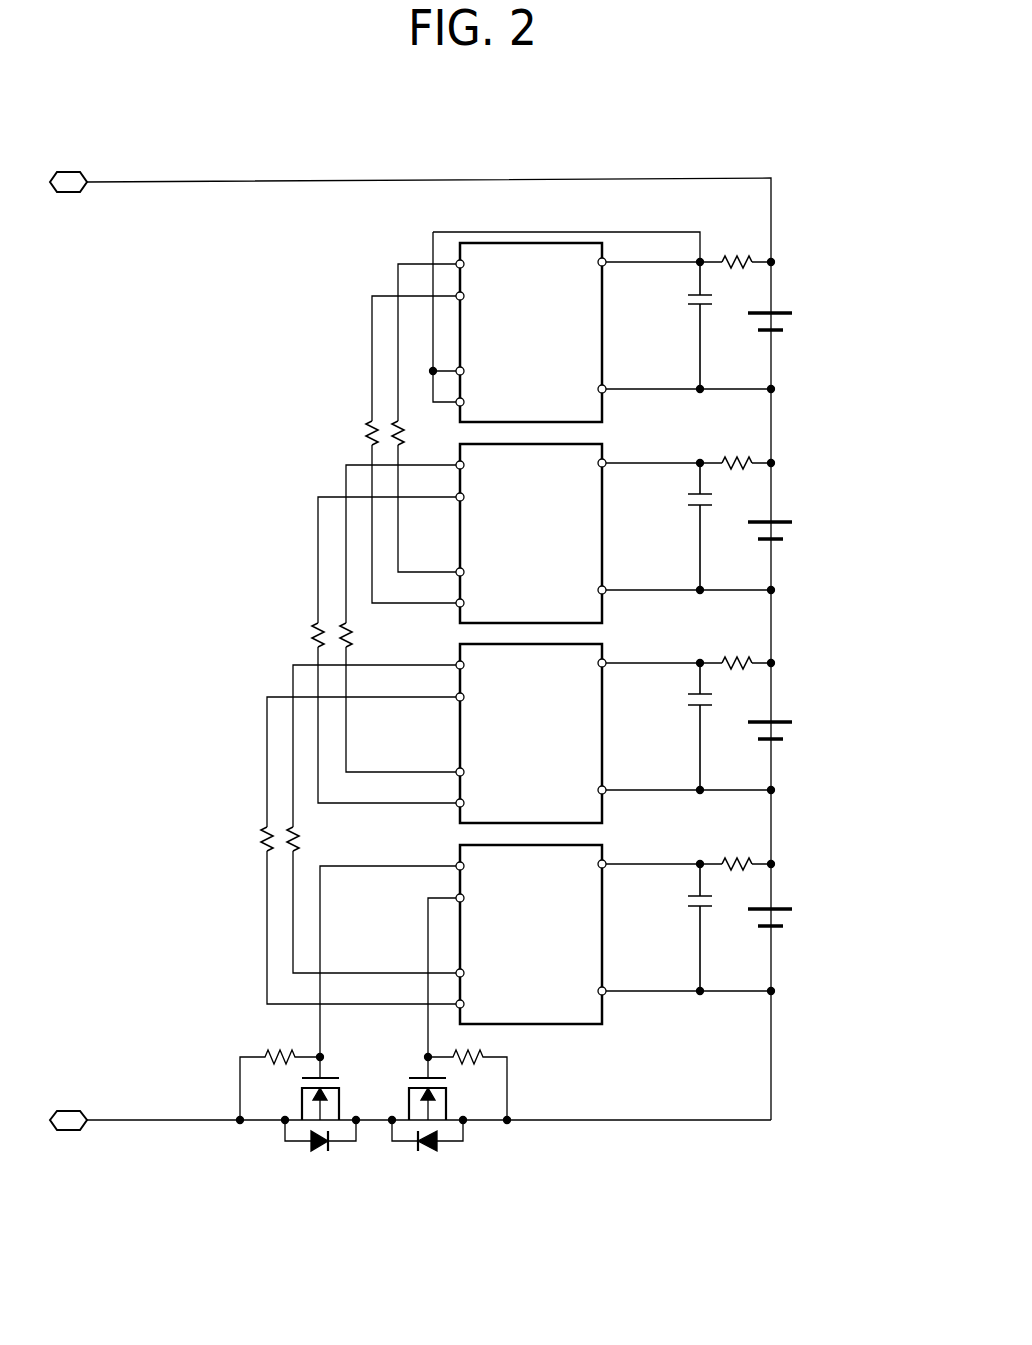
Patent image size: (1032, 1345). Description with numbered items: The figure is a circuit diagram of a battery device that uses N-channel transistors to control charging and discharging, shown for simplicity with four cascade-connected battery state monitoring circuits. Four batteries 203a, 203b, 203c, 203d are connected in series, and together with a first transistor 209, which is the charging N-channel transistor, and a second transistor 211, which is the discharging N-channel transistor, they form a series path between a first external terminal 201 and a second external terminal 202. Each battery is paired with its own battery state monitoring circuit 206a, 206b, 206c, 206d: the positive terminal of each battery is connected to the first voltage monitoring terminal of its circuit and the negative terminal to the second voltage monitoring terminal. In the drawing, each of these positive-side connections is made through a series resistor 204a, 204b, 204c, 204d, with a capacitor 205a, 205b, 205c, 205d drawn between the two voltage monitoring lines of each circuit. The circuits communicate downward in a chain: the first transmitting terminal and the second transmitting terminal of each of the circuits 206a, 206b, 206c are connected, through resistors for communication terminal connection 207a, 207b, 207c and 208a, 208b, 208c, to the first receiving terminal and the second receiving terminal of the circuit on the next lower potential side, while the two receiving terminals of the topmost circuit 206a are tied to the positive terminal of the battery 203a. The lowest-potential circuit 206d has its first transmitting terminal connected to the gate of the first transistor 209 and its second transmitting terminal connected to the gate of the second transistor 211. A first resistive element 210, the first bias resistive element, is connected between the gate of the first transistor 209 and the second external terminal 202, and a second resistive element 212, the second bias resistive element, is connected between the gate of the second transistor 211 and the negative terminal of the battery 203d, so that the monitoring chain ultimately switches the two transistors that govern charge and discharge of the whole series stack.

The first external terminal 201 is at (68, 192).
The second external terminal 202 is at (68, 1130).
The battery 203a is at (782, 316).
The battery 203b is at (782, 525).
The battery 203c is at (782, 725).
The battery 203d is at (788, 911).
The resistor 204a is at (747, 252).
The resistor 204b is at (747, 456).
The resistor 204c is at (747, 656).
The resistor 204d is at (747, 857).
The capacitor 205a is at (718, 302).
The capacitor 205b is at (718, 500).
The capacitor 205c is at (718, 702).
The capacitor 205d is at (720, 901).
The battery state monitoring circuit 206a is at (465, 258).
The battery state monitoring circuit 206b is at (462, 545).
The battery state monitoring circuit 206c is at (462, 752).
The battery state monitoring circuit 206d is at (482, 950).
The resistor for communication terminal connection 207a is at (397, 421).
The resistor for communication terminal connection 207b is at (347, 622).
The resistor for communication terminal connection 207c is at (293, 826).
The resistor for communication terminal connection 208a is at (368, 428).
The resistor for communication terminal connection 208b is at (318, 636).
The resistor for communication terminal connection 208c is at (267, 835).
The first transistor 209 is at (303, 1155).
The first resistive element 210 is at (253, 1052).
The second transistor 211 is at (425, 1155).
The second resistive element 212 is at (490, 1062).